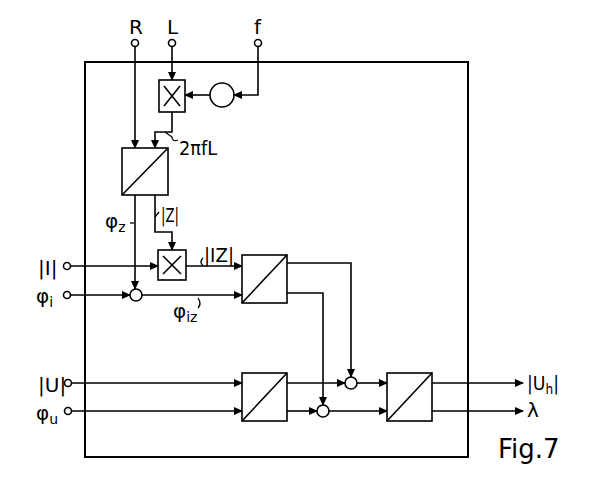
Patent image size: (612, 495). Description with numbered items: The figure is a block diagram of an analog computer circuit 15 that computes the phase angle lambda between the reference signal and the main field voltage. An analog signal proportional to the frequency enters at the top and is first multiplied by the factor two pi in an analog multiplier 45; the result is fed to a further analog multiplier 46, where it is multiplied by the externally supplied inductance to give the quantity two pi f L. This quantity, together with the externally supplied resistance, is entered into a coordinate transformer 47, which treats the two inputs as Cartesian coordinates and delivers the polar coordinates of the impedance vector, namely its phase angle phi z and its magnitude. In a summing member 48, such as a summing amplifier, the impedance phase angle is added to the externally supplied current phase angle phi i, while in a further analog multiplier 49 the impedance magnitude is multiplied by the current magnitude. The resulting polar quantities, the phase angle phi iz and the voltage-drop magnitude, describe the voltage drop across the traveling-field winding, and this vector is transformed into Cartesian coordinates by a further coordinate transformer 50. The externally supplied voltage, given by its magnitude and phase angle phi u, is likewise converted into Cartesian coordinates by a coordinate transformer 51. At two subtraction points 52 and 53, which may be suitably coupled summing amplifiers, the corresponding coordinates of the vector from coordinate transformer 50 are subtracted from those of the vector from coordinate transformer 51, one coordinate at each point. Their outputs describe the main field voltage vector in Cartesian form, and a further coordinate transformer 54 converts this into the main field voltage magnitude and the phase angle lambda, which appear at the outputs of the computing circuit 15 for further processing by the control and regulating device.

The analog computer circuit 15 is at (457, 182).
The analog multiplier 45 is at (231, 104).
The analog multiplier 46 is at (182, 112).
The coordinate transformer 47 is at (168, 175).
The summing member 48 is at (136, 301).
The analog multiplier 49 is at (181, 250).
The coordinate transformer 50 is at (260, 255).
The coordinate transformer 51 is at (262, 373).
The subtraction point 52 is at (356, 379).
The subtraction point 53 is at (323, 417).
The coordinate transformer 54 is at (410, 373).